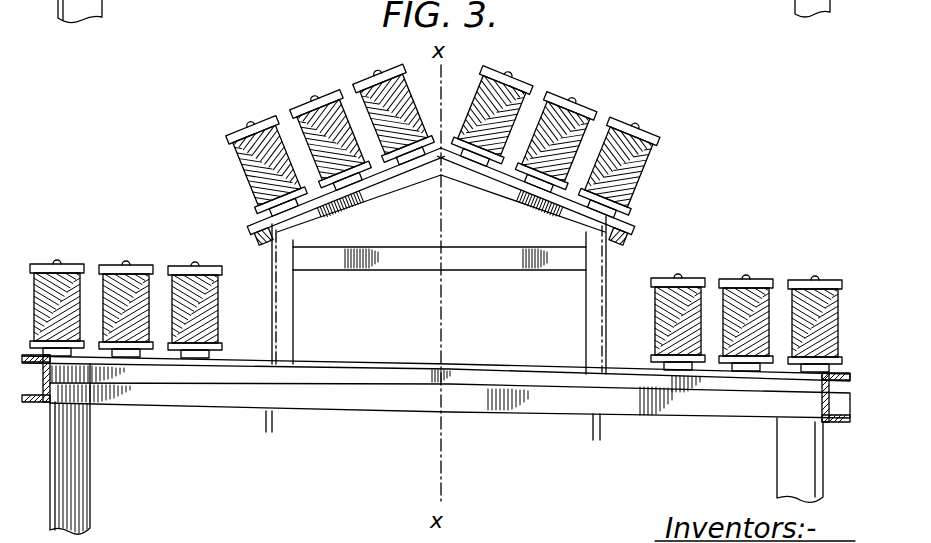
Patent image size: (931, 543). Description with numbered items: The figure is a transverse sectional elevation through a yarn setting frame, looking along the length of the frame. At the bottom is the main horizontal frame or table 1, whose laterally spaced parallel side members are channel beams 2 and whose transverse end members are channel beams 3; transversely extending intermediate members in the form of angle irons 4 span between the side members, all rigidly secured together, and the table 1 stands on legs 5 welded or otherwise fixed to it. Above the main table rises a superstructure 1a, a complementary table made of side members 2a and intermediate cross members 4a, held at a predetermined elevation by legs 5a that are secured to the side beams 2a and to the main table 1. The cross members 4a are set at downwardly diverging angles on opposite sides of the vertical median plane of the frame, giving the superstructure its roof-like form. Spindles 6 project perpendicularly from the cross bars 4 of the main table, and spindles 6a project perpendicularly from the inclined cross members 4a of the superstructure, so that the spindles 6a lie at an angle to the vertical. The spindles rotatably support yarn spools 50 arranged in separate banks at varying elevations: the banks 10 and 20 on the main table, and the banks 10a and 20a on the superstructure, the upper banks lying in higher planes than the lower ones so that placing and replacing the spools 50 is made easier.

The main horizontal frame or table 1 is at (537, 357).
The superstructure 1a is at (405, 197).
The side member 2 is at (43, 380).
The side member of superstructure 2a is at (667, 245).
The end member 3 is at (407, 403).
The intermediate member 4 is at (318, 366).
The cross member of superstructure 4a is at (347, 200).
The leg 5 is at (63, 462).
The leg of superstructure 5a is at (294, 293).
The spindle 6 is at (200, 268).
The spindle of superstructure 6a is at (450, 129).
The spool bank 10 is at (223, 260).
The spool bank 10a is at (323, 89).
The spool bank 20 is at (847, 262).
The spool bank 20a is at (562, 93).
The spool 50 is at (227, 144).